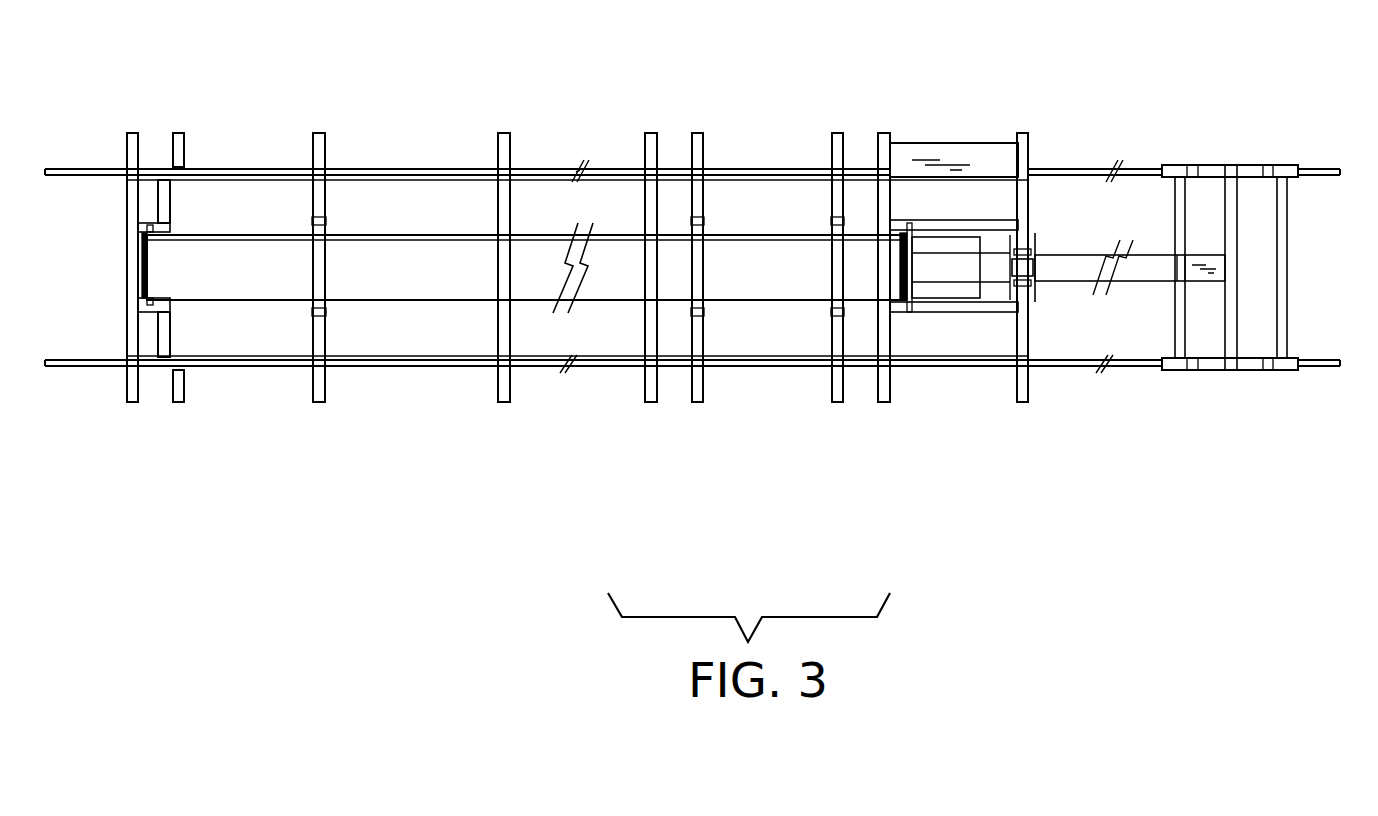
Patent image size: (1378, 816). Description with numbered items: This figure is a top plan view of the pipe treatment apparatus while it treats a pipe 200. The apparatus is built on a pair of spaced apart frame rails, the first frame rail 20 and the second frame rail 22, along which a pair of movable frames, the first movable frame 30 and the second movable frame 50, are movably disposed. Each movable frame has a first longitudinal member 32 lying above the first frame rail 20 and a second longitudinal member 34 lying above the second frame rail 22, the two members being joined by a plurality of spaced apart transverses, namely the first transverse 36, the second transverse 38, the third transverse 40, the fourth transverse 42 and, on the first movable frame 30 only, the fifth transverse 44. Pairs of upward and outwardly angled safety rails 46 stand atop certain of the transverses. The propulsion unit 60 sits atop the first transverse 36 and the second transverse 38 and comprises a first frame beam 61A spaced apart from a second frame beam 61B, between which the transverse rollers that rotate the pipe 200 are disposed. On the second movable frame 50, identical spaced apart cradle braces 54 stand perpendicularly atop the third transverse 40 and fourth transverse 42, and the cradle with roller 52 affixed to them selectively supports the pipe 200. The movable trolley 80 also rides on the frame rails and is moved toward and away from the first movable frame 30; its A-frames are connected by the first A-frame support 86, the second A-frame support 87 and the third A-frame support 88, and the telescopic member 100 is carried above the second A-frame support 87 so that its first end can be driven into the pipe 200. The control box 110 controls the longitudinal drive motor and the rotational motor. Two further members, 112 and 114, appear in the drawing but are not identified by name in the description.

The first frame rail 20 is at (70, 367).
The second frame rail 22 is at (80, 168).
The first movable frame 30 is at (645, 417).
The first longitudinal member 32 is at (340, 368).
The second longitudinal member 34 is at (366, 168).
The first transverse 36 is at (498, 326).
The second transverse 38 is at (318, 133).
The third transverse 40 is at (172, 202).
The fourth transverse 42 is at (136, 133).
The fifth transverse 44 is at (645, 326).
The safety rails 46 is at (312, 220).
The second movable frame 50 is at (437, 412).
The cradle with roller 52 is at (140, 314).
The cradle braces 54 is at (130, 308).
The propulsion unit 60 is at (1043, 238).
The first frame beam 61A is at (930, 318).
The second frame beam 61B is at (975, 222).
The movable trolley 80 is at (1252, 143).
The first A-frame support 86 is at (1183, 200).
The second A-frame support 87 is at (1228, 208).
The third A-frame support 88 is at (1288, 262).
The telescopic member 100 is at (1136, 284).
The control box 110 is at (930, 143).
The support post 112 is at (840, 133).
The end post 114 is at (1023, 133).
The pipe 200 is at (412, 222).